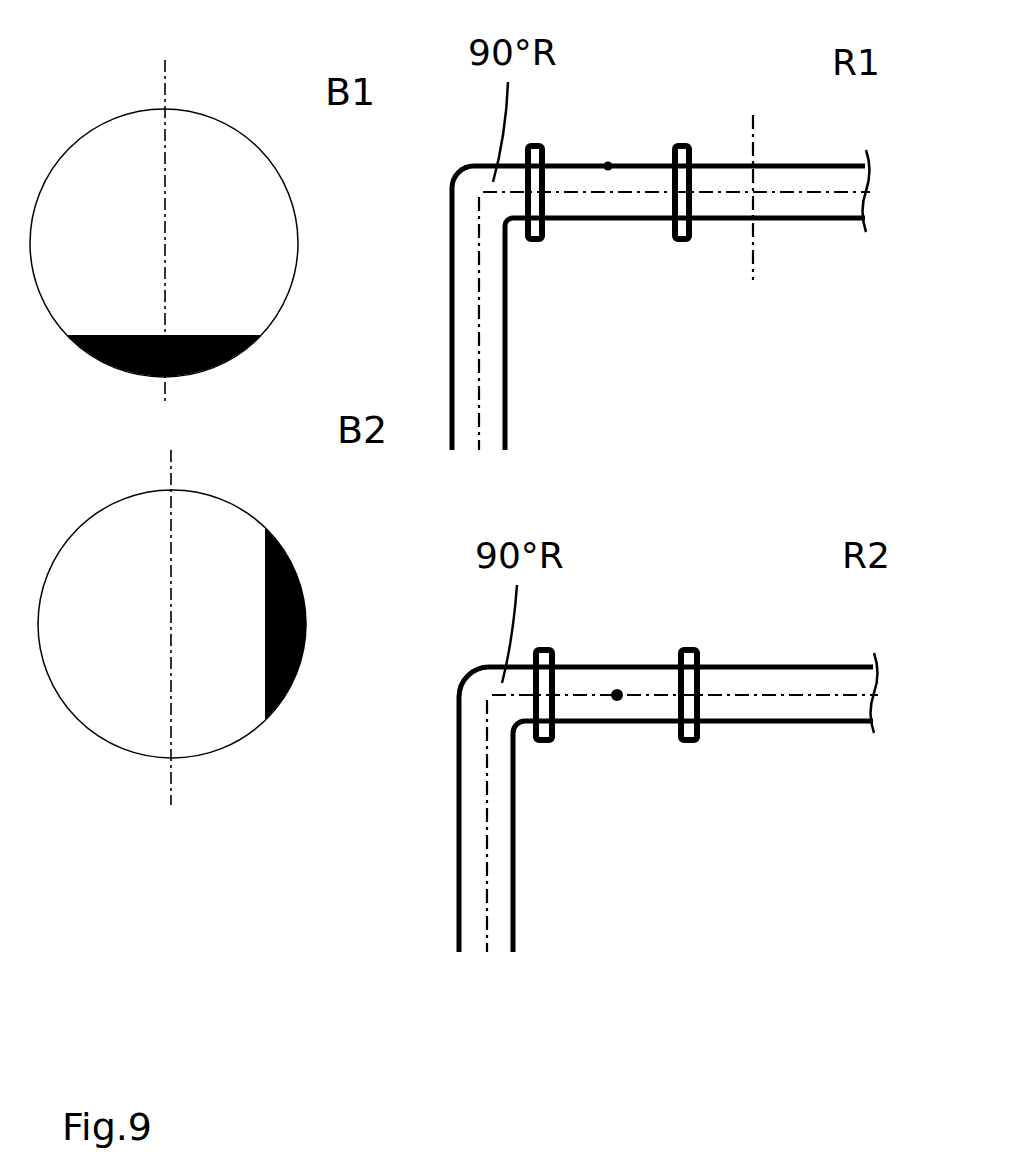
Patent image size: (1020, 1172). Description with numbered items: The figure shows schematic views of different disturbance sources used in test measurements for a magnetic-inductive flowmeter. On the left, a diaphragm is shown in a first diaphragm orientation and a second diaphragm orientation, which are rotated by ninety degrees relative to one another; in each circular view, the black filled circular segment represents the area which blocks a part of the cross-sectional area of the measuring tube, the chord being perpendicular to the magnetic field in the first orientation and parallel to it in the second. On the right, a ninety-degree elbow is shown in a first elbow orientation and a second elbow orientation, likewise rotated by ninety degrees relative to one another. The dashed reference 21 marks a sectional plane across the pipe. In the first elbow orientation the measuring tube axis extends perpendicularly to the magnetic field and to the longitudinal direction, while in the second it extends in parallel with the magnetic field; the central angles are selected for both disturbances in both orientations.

The sectional plane 21 is at (754, 224).